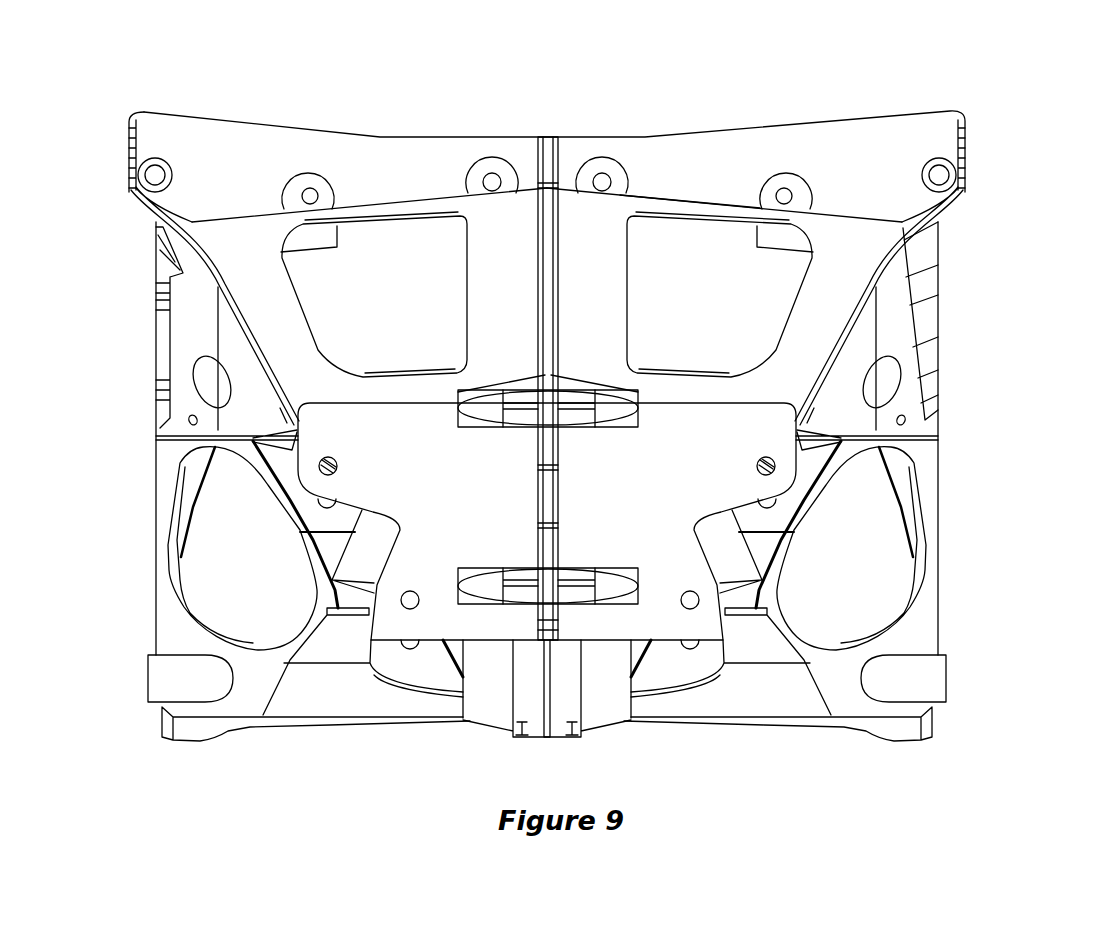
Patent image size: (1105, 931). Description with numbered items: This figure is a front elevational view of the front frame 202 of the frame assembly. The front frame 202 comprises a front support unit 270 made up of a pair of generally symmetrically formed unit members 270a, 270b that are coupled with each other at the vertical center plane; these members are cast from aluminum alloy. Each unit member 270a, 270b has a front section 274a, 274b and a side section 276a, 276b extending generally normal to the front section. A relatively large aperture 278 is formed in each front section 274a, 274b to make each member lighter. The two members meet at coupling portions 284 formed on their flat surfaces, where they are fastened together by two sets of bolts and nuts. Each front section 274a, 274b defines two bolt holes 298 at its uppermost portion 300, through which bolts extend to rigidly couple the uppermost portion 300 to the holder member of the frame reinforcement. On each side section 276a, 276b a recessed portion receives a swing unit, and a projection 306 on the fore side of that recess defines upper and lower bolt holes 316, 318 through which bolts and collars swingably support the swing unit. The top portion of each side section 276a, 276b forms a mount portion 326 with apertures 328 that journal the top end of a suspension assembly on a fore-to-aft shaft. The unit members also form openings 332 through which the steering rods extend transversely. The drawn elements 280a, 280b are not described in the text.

The front frame 202 is at (952, 248).
The front support unit 270 is at (642, 115).
The unit member 270a is at (380, 148).
The unit member 270b is at (757, 147).
The front section 274a is at (245, 232).
The front section 274b is at (898, 127).
The side section 276a is at (155, 362).
The side section 276b is at (940, 355).
The aperture 278 is at (667, 233).
The first lower strut 280a is at (318, 445).
The second lower strut 280b is at (765, 435).
The coupling portion 284 is at (600, 580).
The bolt hole 298 is at (311, 196).
The uppermost portion 300 is at (695, 148).
The projection 306 is at (443, 605).
The upper bolt hole 316 is at (322, 443).
The lower bolt hole 318 is at (417, 595).
The mount portion 326 is at (143, 133).
The aperture 328 is at (150, 176).
The opening 332 is at (207, 515).